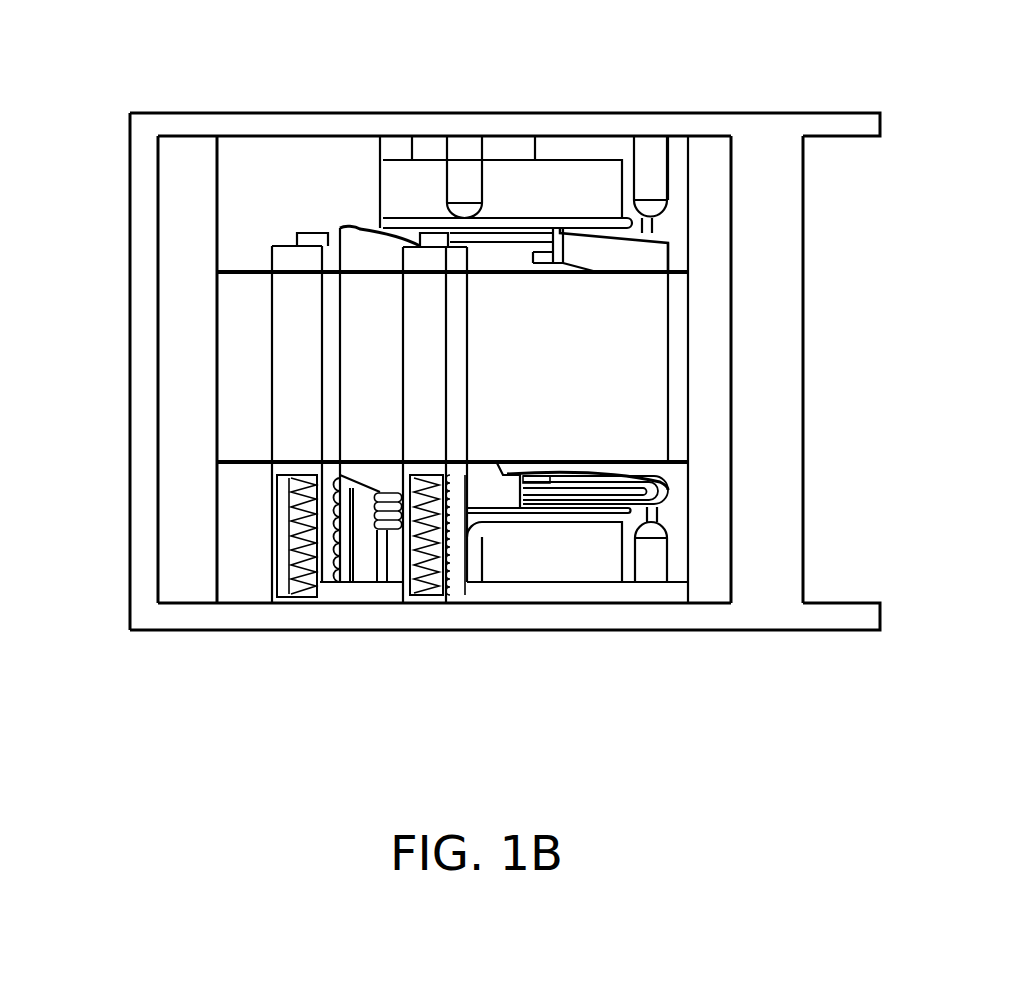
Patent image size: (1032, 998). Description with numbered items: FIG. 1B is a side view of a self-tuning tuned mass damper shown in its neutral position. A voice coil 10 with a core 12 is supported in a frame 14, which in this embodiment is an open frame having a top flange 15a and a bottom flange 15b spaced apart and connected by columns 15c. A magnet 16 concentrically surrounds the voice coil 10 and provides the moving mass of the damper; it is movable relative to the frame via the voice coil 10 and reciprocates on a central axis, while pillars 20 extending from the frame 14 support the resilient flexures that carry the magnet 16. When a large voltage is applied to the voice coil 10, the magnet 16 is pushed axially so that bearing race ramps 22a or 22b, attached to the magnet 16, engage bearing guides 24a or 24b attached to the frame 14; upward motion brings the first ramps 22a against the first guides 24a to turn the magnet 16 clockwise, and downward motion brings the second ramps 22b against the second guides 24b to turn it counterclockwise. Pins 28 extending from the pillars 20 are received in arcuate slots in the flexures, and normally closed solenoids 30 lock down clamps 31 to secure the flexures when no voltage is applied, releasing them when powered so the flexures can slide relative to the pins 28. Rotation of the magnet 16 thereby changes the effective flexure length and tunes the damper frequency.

The voice coil 10 is at (567, 512).
The core 12 is at (543, 557).
The frame 14 is at (128, 111).
The top flange 15a is at (222, 110).
The bottom flange 15b is at (290, 628).
The columns 15c is at (185, 415).
The magnet 16 is at (602, 358).
The pillars 20 is at (432, 368).
The first bearing race ramps 22a is at (641, 232).
The second bearing race ramps 22b is at (660, 498).
The first bearing guides 24a is at (652, 210).
The second bearing guides 24b is at (653, 528).
The pins 28 is at (430, 258).
The solenoids 30 is at (410, 538).
The clamps 31 is at (435, 232).